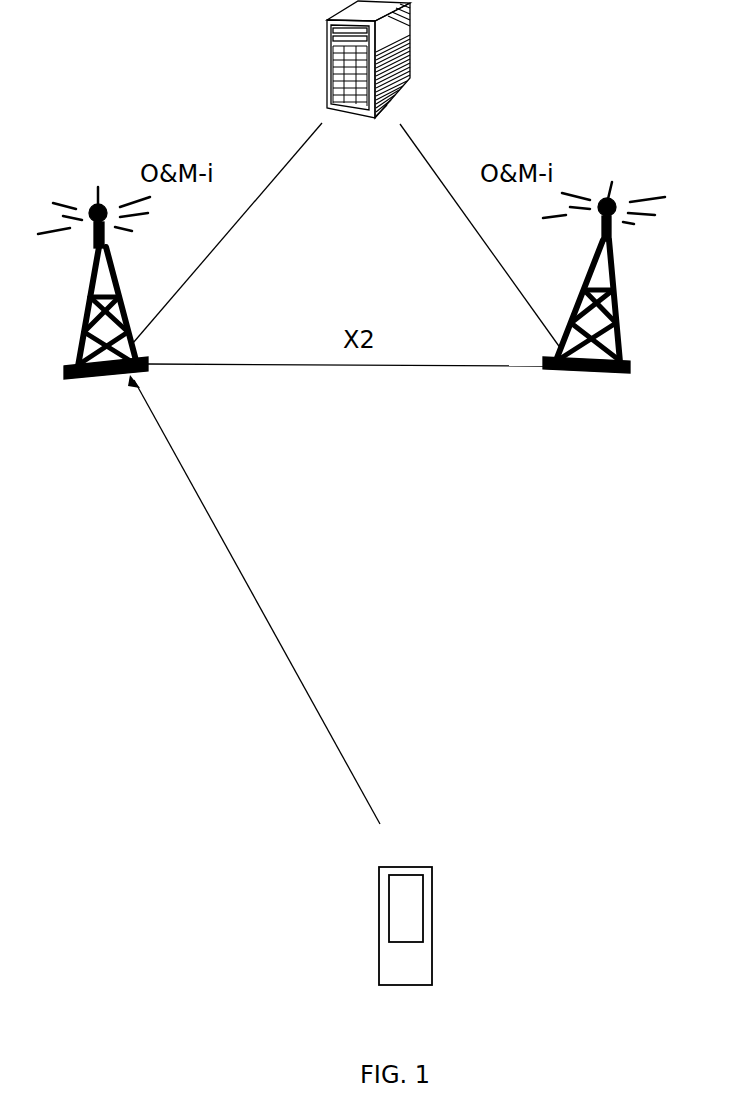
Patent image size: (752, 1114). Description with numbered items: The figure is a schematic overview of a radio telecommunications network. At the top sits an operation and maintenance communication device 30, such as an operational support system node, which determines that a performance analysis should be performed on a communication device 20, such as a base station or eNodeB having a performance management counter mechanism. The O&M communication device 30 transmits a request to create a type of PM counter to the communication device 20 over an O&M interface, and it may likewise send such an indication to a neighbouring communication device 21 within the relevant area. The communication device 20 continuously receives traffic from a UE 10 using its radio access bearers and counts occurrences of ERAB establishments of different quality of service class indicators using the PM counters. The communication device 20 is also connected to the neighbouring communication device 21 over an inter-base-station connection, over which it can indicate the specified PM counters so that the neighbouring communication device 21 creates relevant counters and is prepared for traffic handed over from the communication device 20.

The UE 10 is at (418, 968).
The communication device 20 is at (94, 311).
The neighbouring communication device 21 is at (604, 304).
The operation and maintenance communication device 30 is at (397, 46).